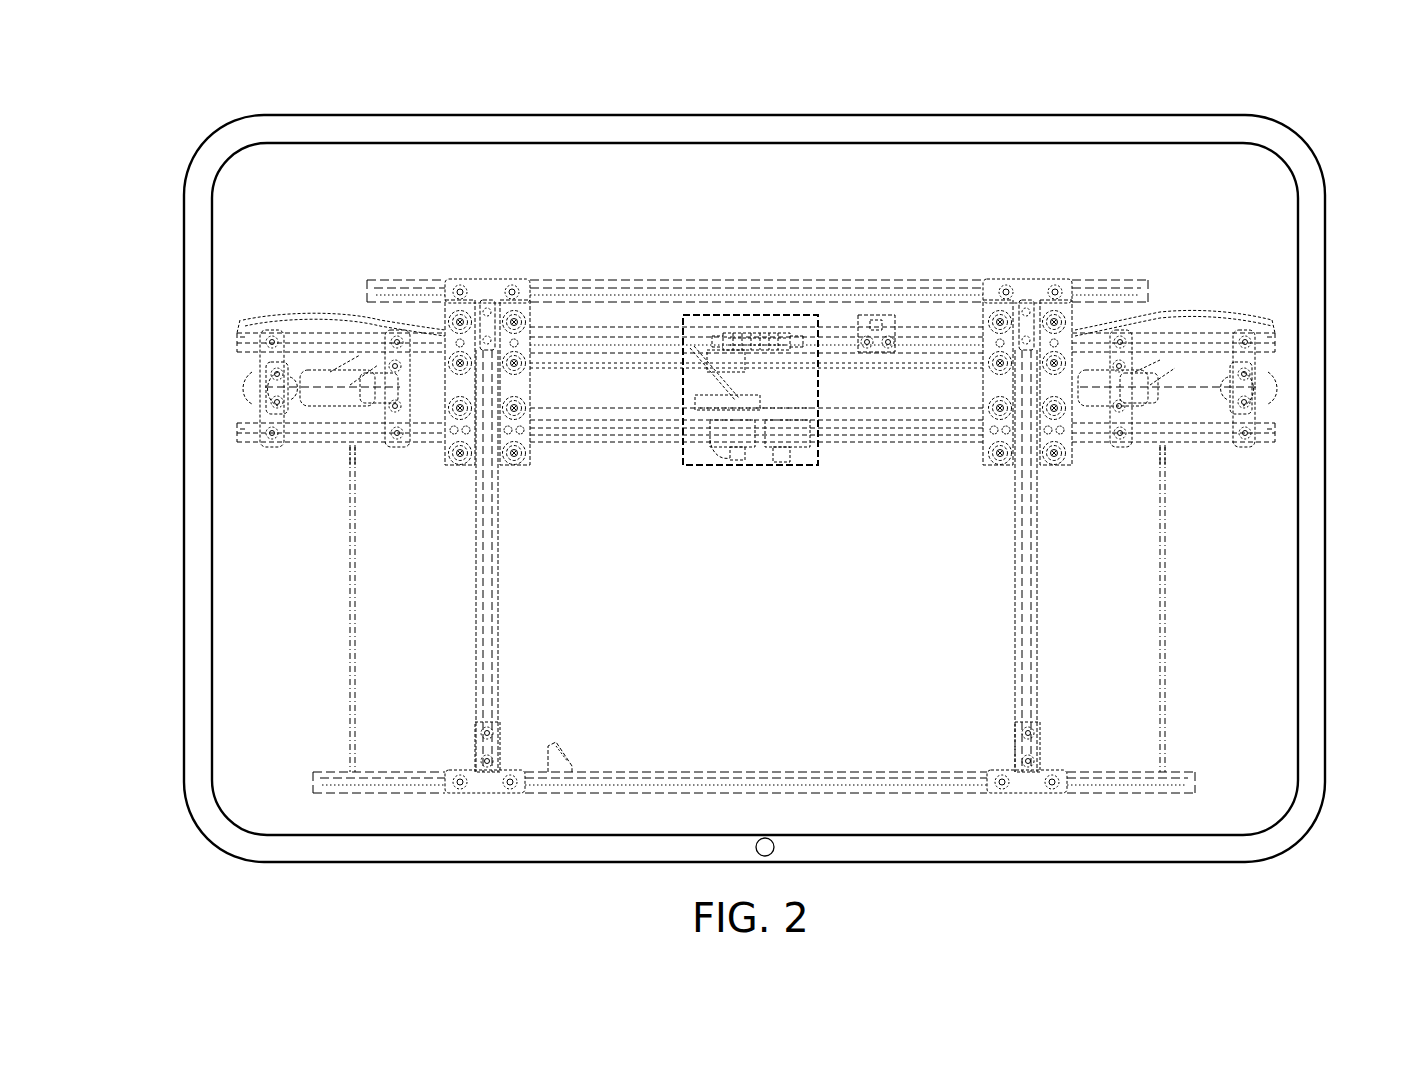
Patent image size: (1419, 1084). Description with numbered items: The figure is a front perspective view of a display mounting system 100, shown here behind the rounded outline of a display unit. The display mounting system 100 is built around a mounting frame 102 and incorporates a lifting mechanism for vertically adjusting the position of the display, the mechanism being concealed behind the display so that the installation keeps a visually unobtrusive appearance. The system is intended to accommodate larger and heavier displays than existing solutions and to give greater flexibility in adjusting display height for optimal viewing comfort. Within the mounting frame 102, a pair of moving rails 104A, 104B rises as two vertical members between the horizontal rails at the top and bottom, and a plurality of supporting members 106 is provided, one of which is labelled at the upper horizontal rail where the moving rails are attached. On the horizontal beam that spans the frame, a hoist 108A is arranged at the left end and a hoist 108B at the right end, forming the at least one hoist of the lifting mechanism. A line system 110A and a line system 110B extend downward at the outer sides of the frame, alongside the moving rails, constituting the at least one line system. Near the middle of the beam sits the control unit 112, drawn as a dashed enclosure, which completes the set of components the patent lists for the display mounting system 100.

The display mounting system 100 is at (470, 282).
The mounting frame 102 is at (183, 384).
The moving rail 104A is at (475, 670).
The moving rail 104B is at (1040, 668).
The supporting members 106 is at (527, 300).
The hoist 108A is at (325, 392).
The hoist 108B is at (1200, 396).
The line system 110A is at (350, 520).
The line system 110B is at (1165, 518).
The control unit 112 is at (745, 315).